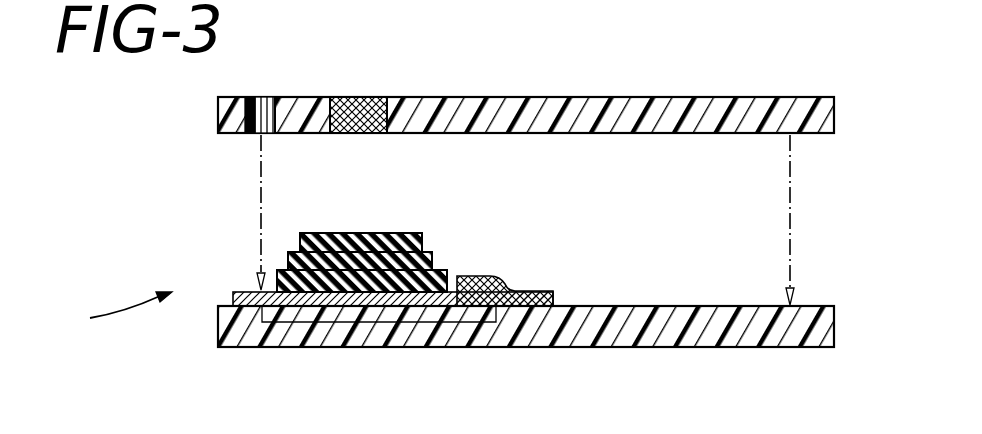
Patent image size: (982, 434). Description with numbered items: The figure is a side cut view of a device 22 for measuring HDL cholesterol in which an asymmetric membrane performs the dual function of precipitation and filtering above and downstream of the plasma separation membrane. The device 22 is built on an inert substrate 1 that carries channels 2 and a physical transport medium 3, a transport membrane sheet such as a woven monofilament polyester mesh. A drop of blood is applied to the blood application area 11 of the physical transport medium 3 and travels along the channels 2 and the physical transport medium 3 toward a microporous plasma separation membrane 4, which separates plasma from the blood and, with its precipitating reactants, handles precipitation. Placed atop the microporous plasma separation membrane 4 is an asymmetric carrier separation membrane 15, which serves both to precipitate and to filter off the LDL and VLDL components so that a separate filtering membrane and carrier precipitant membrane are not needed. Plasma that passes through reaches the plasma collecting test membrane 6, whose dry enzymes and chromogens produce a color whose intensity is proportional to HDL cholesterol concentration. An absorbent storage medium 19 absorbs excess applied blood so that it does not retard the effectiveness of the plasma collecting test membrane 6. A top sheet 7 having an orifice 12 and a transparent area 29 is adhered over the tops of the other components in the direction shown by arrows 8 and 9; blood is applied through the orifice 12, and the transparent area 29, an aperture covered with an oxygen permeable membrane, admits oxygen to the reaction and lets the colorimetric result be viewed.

The inert substrate 1 is at (730, 347).
The channels 2 is at (278, 322).
The physical transport medium 3 is at (463, 322).
The microporous plasma separation membrane 4 is at (447, 272).
The plasma collecting test membrane 6 is at (407, 233).
The top sheet 7 is at (714, 97).
The arrow 8 is at (790, 215).
The arrow 9 is at (261, 163).
The blood application area 11 is at (260, 297).
The orifice 12 is at (268, 97).
The asymmetric carrier separation membrane 15 is at (432, 258).
The absorbent storage medium 19 is at (553, 290).
The device 22 is at (112, 312).
The transparent area 29 is at (377, 97).